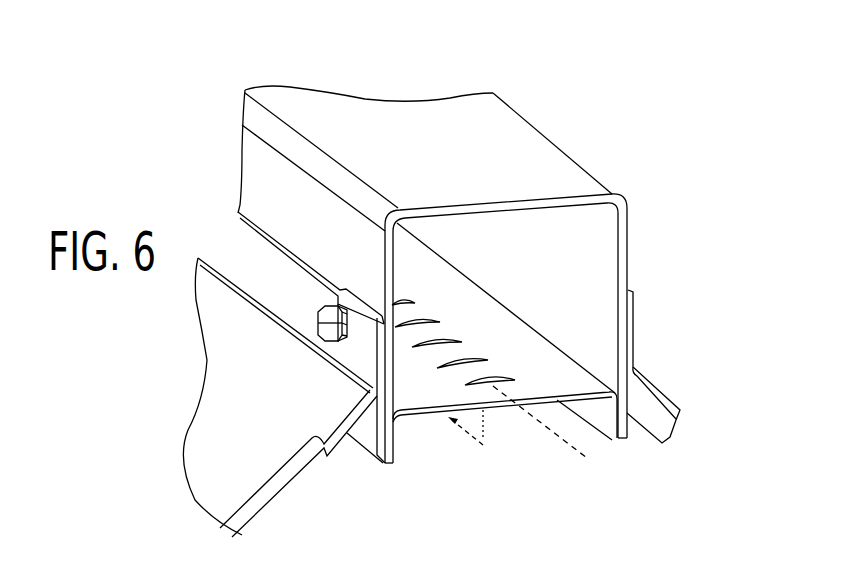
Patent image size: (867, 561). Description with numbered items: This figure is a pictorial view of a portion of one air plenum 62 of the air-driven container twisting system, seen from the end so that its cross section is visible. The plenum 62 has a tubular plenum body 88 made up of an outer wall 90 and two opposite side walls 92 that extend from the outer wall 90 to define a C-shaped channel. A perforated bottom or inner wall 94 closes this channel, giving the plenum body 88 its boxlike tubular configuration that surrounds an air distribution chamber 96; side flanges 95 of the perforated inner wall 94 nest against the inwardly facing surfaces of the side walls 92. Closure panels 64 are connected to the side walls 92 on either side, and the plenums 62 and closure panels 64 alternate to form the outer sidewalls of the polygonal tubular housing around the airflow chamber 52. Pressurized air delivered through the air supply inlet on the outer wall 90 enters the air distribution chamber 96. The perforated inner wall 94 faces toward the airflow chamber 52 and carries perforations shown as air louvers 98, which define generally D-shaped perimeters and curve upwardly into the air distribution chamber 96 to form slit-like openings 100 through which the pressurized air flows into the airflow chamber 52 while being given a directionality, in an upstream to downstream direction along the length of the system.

The airflow chamber 52 is at (612, 481).
The air plenum 62 is at (372, 86).
The closure panel 64 is at (222, 412).
The tubular plenum body 88 is at (432, 97).
The outer wall 90 is at (485, 127).
The side wall 92 is at (267, 190).
The perforated inner wall 94 is at (538, 375).
The side flange 95 is at (590, 408).
The air distribution chamber 96 is at (588, 257).
The air louver 98 is at (499, 370).
The louver opening 100 is at (513, 383).